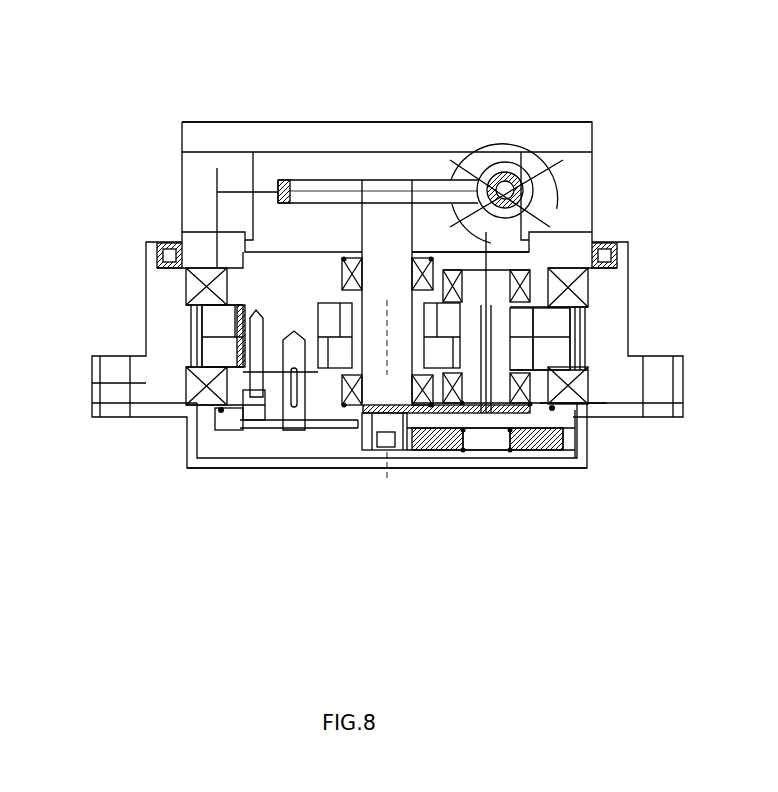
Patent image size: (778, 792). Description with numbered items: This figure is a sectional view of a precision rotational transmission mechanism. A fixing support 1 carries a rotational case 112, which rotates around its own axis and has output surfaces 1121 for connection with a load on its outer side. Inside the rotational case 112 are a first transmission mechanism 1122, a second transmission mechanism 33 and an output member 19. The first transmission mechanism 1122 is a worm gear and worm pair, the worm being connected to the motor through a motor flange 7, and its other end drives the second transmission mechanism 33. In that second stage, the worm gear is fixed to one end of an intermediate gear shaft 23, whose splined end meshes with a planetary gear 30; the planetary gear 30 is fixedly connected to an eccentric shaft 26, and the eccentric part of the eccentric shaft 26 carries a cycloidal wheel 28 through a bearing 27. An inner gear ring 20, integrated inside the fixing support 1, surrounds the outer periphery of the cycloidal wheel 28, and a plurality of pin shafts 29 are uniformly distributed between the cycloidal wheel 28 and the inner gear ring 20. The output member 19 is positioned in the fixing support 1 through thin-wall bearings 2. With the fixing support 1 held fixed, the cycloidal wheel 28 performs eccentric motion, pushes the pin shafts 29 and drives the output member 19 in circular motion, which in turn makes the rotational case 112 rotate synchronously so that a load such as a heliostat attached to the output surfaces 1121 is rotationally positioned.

The fixing support 1 is at (160, 333).
The thin-wall bearings 2 is at (183, 383).
The motor flange 7 is at (545, 153).
The output member 19 is at (260, 278).
The inner gear ring 20 is at (188, 322).
The intermediate gear shaft 23 is at (352, 425).
The eccentric shaft 26 is at (484, 290).
The bearing 27 is at (530, 316).
The cycloidal wheel 28 is at (553, 322).
The pin shafts 29 is at (582, 335).
The planetary gear 30 is at (575, 430).
The second transmission mechanism 33 is at (404, 340).
The rotational case 112 is at (286, 222).
The output surfaces 1121 is at (380, 118).
The first transmission mechanism 1122 is at (391, 178).